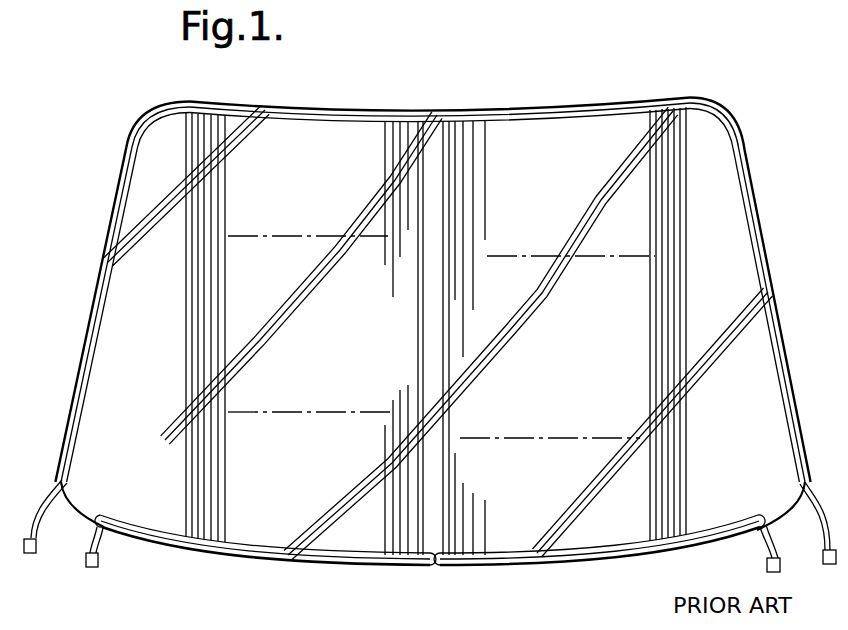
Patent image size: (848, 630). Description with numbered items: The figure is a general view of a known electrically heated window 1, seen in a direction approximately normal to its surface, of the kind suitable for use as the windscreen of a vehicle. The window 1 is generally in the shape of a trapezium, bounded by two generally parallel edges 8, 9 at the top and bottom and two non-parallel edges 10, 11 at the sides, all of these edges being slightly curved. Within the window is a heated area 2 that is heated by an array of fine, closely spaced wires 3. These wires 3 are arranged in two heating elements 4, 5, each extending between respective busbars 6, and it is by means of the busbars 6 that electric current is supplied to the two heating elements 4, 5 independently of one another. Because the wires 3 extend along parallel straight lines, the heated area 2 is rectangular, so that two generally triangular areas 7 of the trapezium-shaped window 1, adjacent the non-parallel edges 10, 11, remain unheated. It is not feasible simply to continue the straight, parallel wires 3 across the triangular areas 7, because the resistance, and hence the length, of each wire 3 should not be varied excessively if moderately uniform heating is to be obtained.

The electrically heated window 1 is at (434, 332).
The heated area 2 is at (441, 333).
The wires 3 is at (176, 130).
The heating element 4 is at (320, 333).
The heating element 5 is at (571, 333).
The busbars 6 is at (304, 116).
The unheated triangular areas 7 is at (125, 388).
The parallel edge 8 is at (357, 108).
The parallel edge 9 is at (369, 572).
The non-parallel edge 10 is at (108, 223).
The non-parallel edge 11 is at (780, 247).